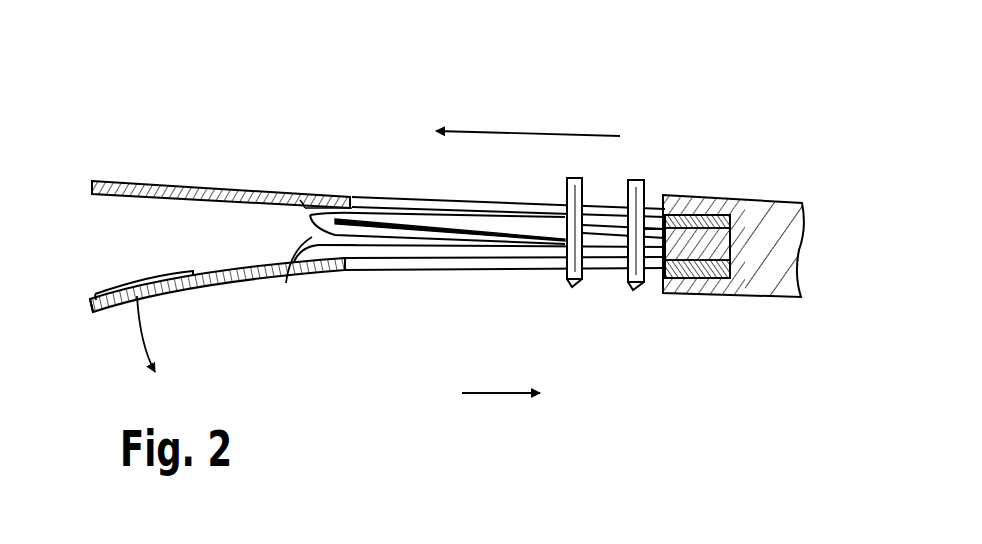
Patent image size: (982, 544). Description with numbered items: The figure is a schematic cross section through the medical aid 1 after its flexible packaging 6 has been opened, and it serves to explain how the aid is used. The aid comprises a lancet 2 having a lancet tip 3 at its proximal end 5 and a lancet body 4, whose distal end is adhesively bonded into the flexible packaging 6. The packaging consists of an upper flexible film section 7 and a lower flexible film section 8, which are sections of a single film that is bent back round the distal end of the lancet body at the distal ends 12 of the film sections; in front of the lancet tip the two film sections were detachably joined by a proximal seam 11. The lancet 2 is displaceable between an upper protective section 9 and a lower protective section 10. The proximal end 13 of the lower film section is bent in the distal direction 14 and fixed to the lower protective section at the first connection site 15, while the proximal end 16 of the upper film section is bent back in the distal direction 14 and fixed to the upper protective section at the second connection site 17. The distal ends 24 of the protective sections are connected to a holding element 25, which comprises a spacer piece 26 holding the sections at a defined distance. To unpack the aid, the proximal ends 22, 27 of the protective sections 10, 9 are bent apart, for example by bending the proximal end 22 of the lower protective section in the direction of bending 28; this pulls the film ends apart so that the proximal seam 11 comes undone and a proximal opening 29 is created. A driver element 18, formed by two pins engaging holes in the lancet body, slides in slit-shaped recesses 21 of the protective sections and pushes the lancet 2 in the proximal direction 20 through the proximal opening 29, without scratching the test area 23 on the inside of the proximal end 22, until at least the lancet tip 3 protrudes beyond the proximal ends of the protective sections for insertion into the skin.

The medical aid 1 is at (250, 92).
The lancet 2 is at (417, 226).
The lancet tip 3 is at (357, 200).
The lancet body 4 is at (603, 237).
The proximal end 5 is at (437, 229).
The flexible packaging 6 is at (404, 270).
The upper flexible film section 7 is at (437, 213).
The lower flexible film section 8 is at (491, 246).
The upper protective section 9 is at (228, 192).
The lower protective section 10 is at (190, 290).
The proximal seam 11 is at (320, 262).
The distal ends 12 is at (650, 247).
The proximal end 13 is at (286, 283).
The distal direction 14 is at (508, 398).
The first connection site 15 is at (299, 260).
The proximal end 16 is at (305, 197).
The second connection site 17 is at (326, 204).
The driver element 18 is at (572, 287).
The proximal direction 20 is at (512, 130).
The slit-shaped recesses 21 is at (497, 208).
The proximal end 22 is at (93, 306).
The test area 23 is at (140, 287).
The distal ends 24 is at (745, 240).
The holding element 25 is at (782, 213).
The spacer piece 26 is at (693, 233).
The proximal end 27 is at (95, 178).
The direction of bending 28 is at (116, 343).
The proximal opening 29 is at (325, 253).